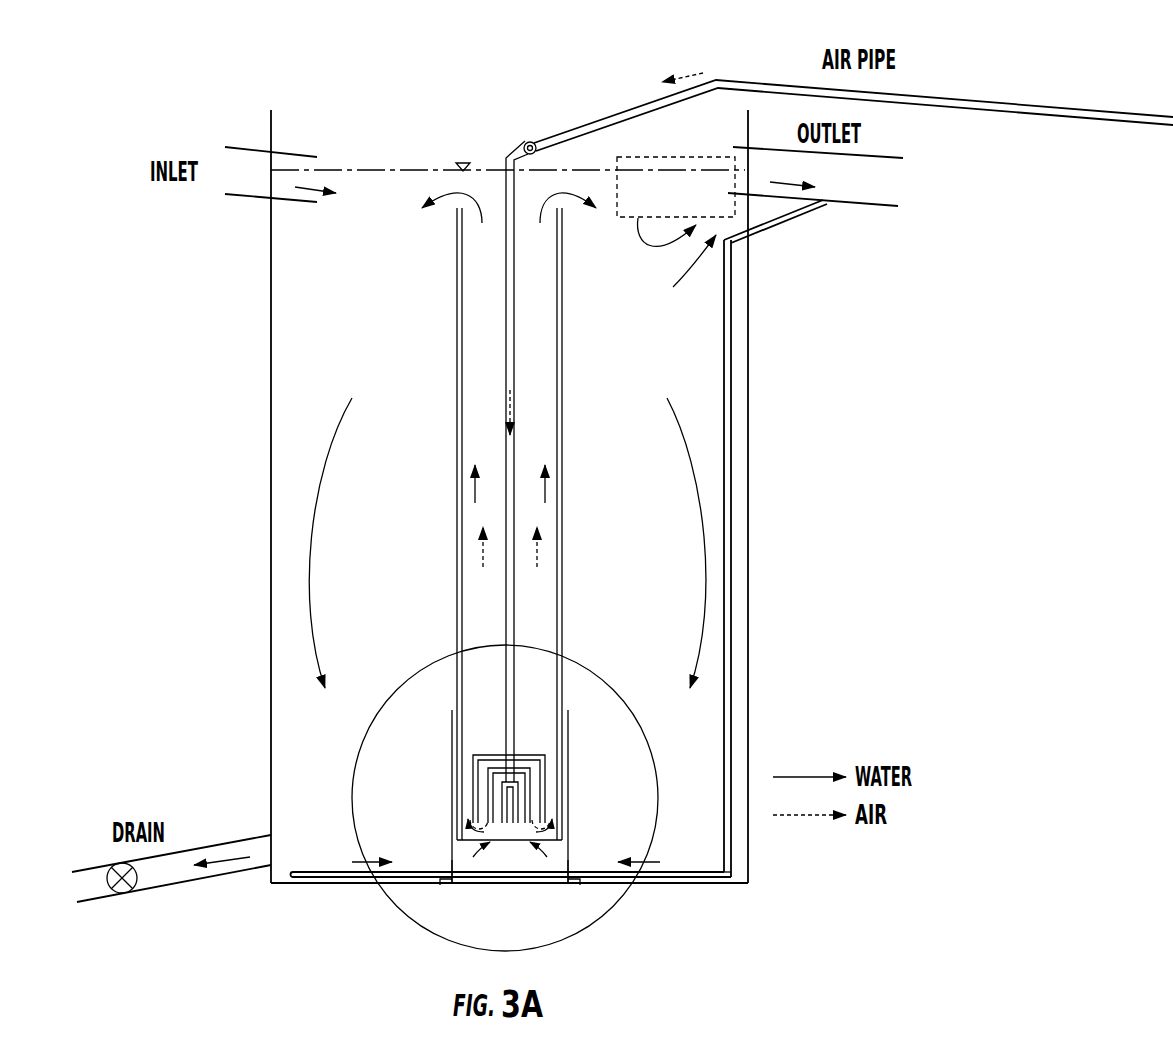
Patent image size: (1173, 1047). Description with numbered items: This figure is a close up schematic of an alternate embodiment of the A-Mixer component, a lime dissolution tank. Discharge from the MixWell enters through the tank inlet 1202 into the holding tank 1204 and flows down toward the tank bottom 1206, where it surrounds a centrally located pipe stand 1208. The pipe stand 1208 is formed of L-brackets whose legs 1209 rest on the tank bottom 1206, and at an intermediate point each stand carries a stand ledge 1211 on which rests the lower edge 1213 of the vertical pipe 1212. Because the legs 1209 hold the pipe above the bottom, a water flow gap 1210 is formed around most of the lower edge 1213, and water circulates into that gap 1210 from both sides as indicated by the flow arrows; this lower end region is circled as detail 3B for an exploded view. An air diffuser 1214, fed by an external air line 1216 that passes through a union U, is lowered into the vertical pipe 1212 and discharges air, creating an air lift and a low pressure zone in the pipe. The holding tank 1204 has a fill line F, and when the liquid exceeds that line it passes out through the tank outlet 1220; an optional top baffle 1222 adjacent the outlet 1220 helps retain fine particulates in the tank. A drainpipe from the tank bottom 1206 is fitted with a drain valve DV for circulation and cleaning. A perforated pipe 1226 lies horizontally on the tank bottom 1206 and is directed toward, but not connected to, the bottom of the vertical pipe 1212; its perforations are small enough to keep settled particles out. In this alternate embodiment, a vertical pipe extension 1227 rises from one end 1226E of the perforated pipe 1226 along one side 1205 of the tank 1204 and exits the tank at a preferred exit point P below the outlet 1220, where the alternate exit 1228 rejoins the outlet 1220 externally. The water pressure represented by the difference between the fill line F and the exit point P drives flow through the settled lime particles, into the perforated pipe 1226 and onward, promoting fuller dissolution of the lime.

The tank inlet 1202 is at (243, 192).
The holding tank 1204 is at (271, 543).
The side of tank 1205 is at (748, 672).
The tank bottom 1206 is at (324, 889).
The pipe stand 1208 is at (453, 767).
The legs 1209 is at (453, 885).
The water flow gap 1210 is at (468, 853).
The stand ledge 1211 is at (562, 840).
The vertical pipe 1212 is at (457, 535).
The lower edge of pipe 1213 is at (503, 840).
The air diffuser 1214 is at (515, 677).
The external air line 1216 is at (577, 123).
The tank outlet 1220 is at (758, 185).
The top baffle 1222 is at (676, 187).
The perforated pipe 1226 is at (407, 870).
The end of perforated pipe 1226E is at (722, 880).
The vertical pipe extension 1227 is at (732, 520).
The alternate exit 1228 is at (803, 209).
The union U is at (525, 142).
The fill line F is at (350, 170).
The exit point P is at (683, 271).
The drain valve DV is at (124, 893).
The detail circle for exploded view 3B is at (563, 942).